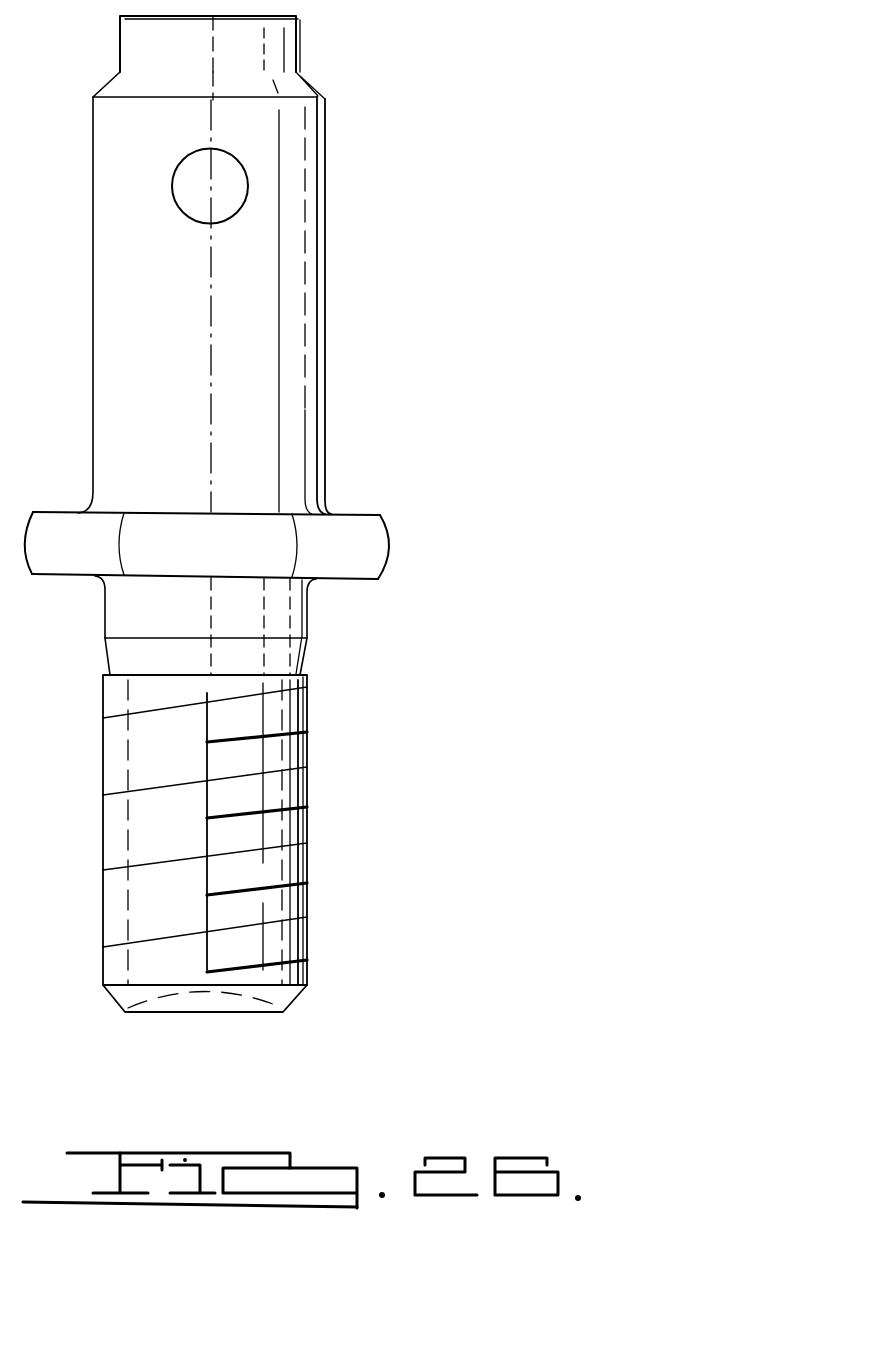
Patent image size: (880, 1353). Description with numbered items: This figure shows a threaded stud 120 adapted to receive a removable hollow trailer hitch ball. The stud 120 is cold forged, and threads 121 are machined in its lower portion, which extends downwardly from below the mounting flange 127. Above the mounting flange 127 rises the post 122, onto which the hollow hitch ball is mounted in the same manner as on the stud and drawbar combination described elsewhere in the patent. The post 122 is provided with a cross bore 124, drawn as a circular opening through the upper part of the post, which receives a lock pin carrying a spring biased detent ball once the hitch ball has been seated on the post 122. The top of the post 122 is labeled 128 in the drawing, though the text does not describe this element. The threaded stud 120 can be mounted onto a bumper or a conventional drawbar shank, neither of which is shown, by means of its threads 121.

The stud 120 is at (317, 426).
The threads 121 is at (300, 823).
The post 122 is at (306, 305).
The cross bore 124 is at (248, 201).
The mounting flange 127 is at (372, 553).
The head 128 is at (292, 52).